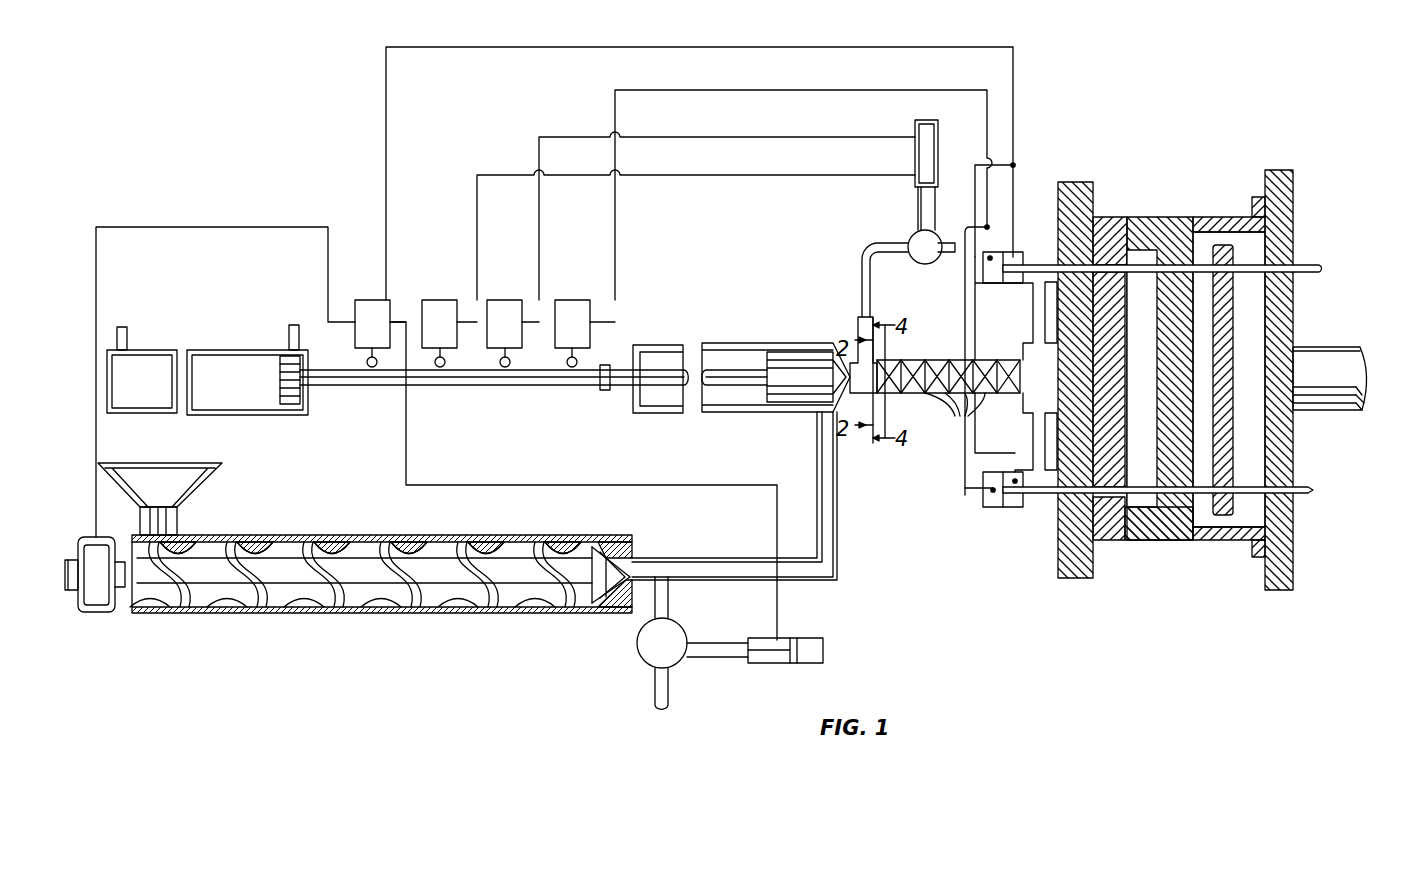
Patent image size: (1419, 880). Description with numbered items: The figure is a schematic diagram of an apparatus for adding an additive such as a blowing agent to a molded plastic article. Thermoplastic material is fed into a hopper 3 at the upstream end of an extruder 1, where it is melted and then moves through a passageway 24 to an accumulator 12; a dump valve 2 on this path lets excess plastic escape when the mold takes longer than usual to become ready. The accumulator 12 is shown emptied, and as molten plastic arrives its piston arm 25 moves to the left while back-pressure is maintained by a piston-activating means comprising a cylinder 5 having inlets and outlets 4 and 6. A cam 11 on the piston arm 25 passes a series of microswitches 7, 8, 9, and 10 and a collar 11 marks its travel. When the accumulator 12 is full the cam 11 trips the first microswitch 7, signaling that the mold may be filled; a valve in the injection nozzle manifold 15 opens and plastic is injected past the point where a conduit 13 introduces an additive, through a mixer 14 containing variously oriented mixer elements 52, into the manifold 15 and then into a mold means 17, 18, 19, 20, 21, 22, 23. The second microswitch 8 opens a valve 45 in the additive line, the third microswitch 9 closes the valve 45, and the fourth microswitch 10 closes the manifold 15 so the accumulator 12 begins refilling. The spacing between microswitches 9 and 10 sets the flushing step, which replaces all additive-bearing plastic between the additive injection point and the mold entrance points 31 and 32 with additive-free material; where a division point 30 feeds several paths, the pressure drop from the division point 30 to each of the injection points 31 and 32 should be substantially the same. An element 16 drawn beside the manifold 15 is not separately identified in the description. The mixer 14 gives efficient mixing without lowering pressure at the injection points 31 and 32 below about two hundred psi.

The extruder 1 is at (375, 614).
The dump valve 2 is at (697, 638).
The hopper 3 is at (172, 470).
The inlet and outlet 4 is at (121, 327).
The cylinder 5 is at (212, 350).
The inlet and outlet 6 is at (295, 325).
The first microswitch 7 is at (373, 299).
The second microswitch 8 is at (440, 299).
The third microswitch 9 is at (507, 299).
The fourth microswitch 10 is at (578, 299).
The cam 11 is at (604, 391).
The accumulator 12 is at (708, 414).
The conduit 13 is at (862, 289).
The mixer 14 is at (980, 357).
The injection nozzle manifold 15 is at (1003, 258).
The bracket 16 is at (1040, 250).
The mold means 17 is at (1070, 182).
The mold means 18 is at (1115, 217).
The mold means 19 is at (1148, 258).
The mold means 20 is at (1203, 245).
The mold means 21 is at (1233, 245).
The mold means 22 is at (1277, 170).
The mold means 23 is at (1343, 345).
The passageway 24 is at (840, 510).
The piston arm 25 is at (421, 388).
The division point 30 is at (1025, 410).
The mold entrance point 31 is at (1120, 262).
The mold entrance point 32 is at (1108, 540).
The valve 45 is at (918, 237).
The mixer elements 52 is at (955, 417).